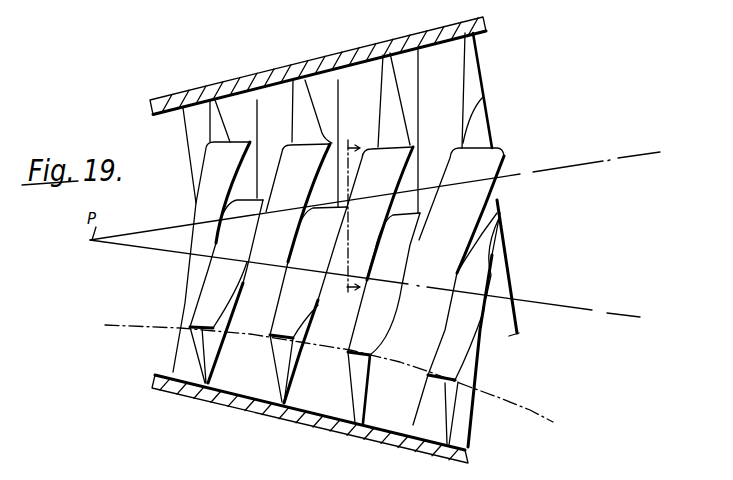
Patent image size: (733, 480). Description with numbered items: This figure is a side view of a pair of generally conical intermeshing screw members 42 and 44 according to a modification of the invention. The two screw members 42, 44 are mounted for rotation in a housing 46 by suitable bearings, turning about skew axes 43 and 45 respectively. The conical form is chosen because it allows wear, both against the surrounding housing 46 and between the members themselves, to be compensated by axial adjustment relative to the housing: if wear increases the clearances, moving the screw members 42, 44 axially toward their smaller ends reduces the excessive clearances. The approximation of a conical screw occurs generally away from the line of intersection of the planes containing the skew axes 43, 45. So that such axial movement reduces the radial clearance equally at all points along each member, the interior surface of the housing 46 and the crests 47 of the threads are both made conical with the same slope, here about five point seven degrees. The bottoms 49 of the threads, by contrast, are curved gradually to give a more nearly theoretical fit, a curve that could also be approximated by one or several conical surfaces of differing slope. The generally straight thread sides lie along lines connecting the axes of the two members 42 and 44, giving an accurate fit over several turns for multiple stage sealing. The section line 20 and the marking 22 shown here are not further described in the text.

The section line 20- 20 is at (346, 219).
The rotor assembly 22 is at (310, 245).
The conical screw member 42 is at (504, 201).
The skew axis 43 is at (566, 304).
The conical screw member 44 is at (494, 71).
The skew axis 45 is at (584, 162).
The housing 46 is at (277, 70).
The crests of the threads 47 is at (437, 43).
The bottoms of the threads 49 is at (328, 132).